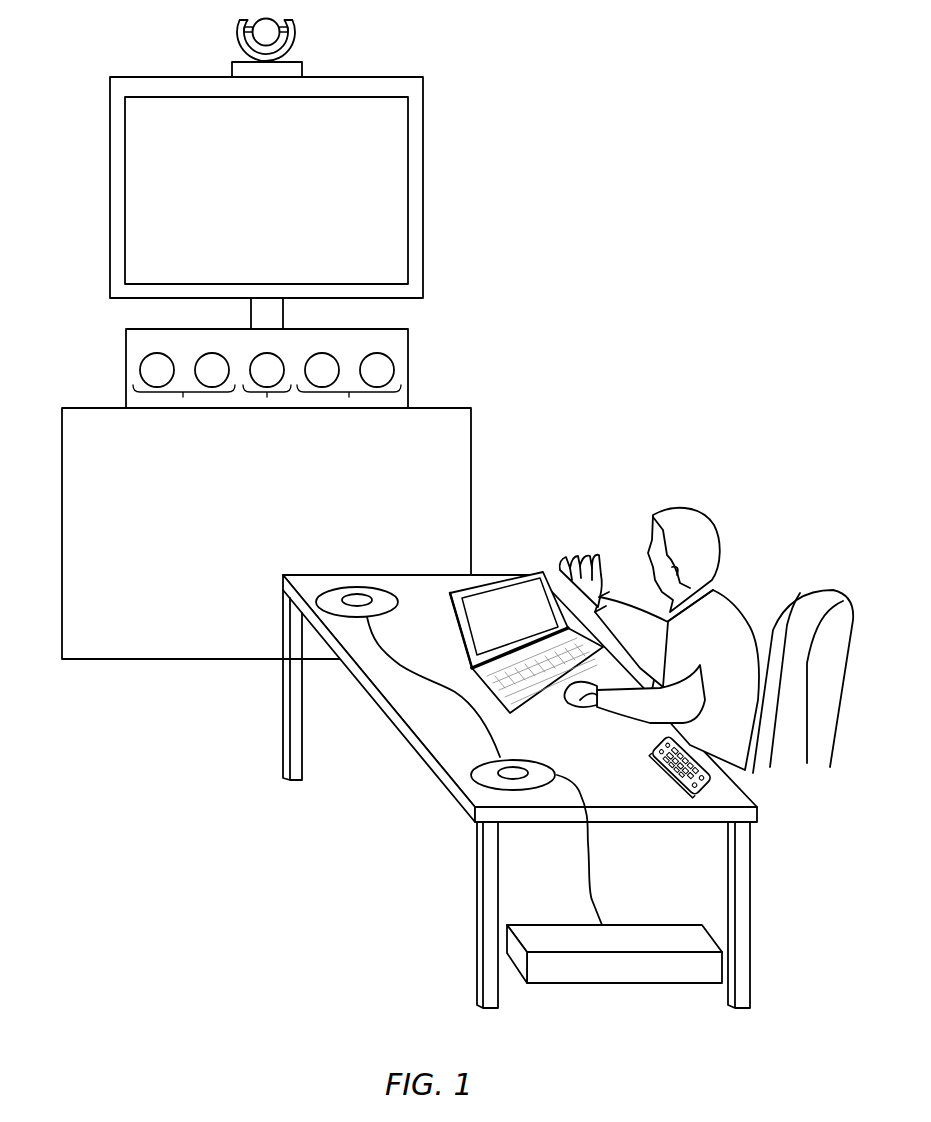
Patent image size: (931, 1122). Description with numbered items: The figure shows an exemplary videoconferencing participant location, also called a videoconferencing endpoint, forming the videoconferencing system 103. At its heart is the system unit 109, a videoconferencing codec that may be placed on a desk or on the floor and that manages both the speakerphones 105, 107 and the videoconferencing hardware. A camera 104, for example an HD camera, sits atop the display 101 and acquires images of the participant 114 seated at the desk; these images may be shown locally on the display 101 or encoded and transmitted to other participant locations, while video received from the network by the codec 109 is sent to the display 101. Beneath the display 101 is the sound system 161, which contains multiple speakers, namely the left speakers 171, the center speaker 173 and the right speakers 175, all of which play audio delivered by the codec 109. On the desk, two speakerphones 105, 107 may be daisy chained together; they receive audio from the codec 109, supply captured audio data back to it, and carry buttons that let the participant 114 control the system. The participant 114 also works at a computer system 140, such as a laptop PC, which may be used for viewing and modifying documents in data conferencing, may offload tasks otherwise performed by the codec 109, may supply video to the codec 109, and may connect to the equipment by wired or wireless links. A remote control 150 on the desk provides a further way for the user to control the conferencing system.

The display 101 is at (380, 139).
The videoconferencing system 103 is at (537, 82).
The camera 104 is at (295, 31).
The speakerphone 105 is at (490, 758).
The speakerphone 107 is at (380, 618).
The system unit (codec) 109 is at (637, 983).
The participant 114 is at (705, 525).
The computer system 140 is at (467, 590).
The remote control 150 is at (667, 772).
The sound system 161 is at (410, 343).
The left speakers 171 is at (183, 397).
The center speaker 173 is at (267, 397).
The right speakers 175 is at (349, 397).